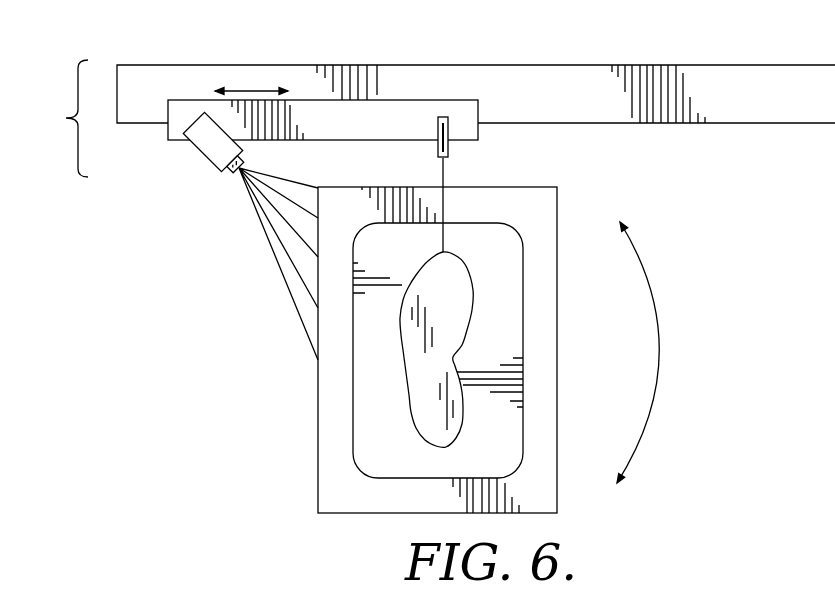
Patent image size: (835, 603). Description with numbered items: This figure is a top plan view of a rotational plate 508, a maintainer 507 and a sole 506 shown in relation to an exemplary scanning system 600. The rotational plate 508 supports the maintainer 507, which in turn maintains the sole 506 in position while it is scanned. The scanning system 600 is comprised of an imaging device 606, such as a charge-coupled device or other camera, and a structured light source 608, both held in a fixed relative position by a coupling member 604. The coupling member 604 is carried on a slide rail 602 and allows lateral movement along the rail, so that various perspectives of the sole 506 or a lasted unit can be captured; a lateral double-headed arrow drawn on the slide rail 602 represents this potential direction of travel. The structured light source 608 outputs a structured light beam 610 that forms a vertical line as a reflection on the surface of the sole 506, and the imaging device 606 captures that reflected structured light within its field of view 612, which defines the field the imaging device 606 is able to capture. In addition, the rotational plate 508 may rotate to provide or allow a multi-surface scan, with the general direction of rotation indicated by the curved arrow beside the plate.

The scanning system 600 is at (54, 118).
The slide rail 602 is at (738, 62).
The coupling member 604 is at (225, 118).
The imaging device 606 is at (208, 147).
The structured light source 608 is at (452, 130).
The light beam 610 is at (447, 173).
The field of view 612 is at (262, 248).
The sole 506 is at (467, 323).
The maintainer 507 is at (377, 418).
The rotational plate 508 is at (345, 492).